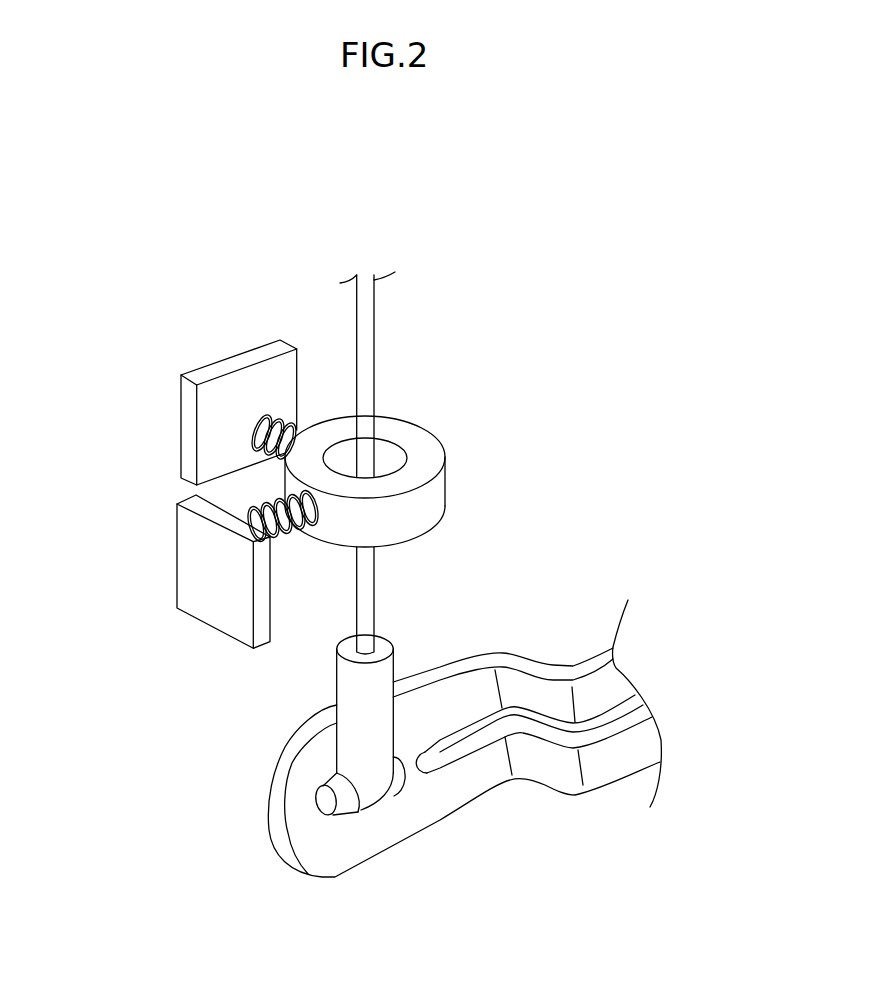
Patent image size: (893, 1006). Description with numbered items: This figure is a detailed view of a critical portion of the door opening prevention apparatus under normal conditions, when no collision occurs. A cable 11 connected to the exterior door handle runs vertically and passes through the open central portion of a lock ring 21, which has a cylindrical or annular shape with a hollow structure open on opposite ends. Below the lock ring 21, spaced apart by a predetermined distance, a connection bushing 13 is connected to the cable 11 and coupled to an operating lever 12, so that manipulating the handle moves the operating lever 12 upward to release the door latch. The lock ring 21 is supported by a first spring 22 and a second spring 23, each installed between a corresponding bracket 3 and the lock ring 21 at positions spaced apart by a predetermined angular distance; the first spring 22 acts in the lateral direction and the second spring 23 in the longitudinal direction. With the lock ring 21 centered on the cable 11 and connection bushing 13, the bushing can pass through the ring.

The bracket 3 is at (192, 420).
The cable 11 is at (367, 340).
The operating lever 12 is at (455, 788).
The connection bushing 13 is at (353, 679).
The lock ring 21 is at (428, 502).
The first spring 22 is at (265, 416).
The second spring 23 is at (260, 513).